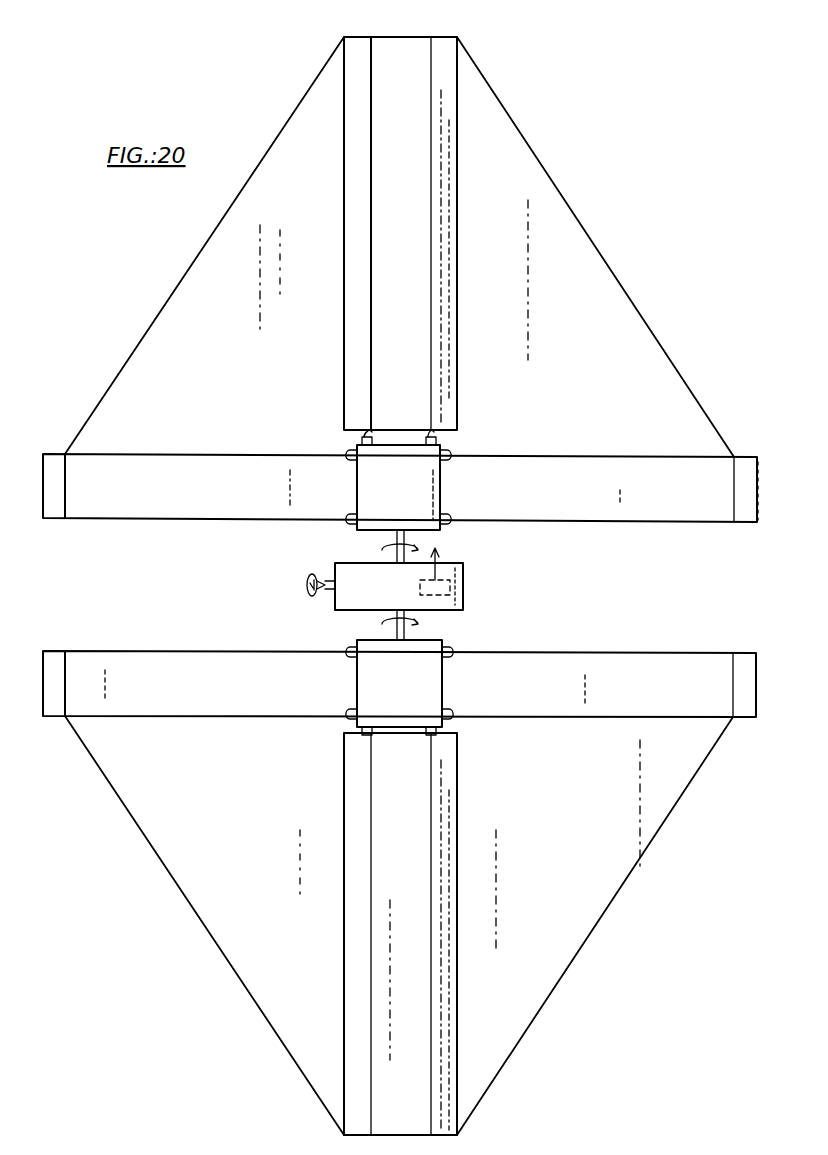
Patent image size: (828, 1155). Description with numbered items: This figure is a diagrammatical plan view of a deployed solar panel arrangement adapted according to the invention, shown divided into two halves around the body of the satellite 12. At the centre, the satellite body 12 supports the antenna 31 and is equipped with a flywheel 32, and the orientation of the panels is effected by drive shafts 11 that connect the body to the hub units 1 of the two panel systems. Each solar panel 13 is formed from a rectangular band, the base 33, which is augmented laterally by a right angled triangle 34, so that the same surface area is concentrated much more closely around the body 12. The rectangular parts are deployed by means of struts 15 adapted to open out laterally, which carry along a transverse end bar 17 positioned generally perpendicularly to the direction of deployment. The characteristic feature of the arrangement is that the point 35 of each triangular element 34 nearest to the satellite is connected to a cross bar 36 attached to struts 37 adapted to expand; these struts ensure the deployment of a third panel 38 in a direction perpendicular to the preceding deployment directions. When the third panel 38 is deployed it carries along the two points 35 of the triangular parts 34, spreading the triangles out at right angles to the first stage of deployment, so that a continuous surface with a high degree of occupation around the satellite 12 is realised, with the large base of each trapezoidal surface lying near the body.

The hub unit 1 is at (399, 582).
The drive shaft 11 is at (392, 547).
The body of the satellite 12 is at (470, 561).
The solar panel 13 is at (148, 325).
The strut 15 is at (238, 454).
The transverse end bar 17 is at (43, 500).
The antenna 31 is at (306, 594).
The flywheel 32 is at (455, 585).
The base 33 is at (137, 500).
The right angled triangle 34 is at (222, 247).
The point 35 is at (343, 37).
The cross bar 36 is at (422, 37).
The strut 37 is at (431, 170).
The third panel 38 is at (400, 222).